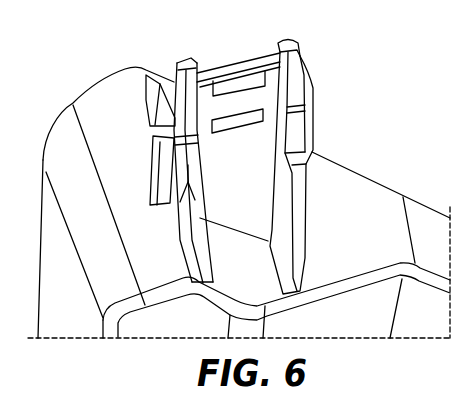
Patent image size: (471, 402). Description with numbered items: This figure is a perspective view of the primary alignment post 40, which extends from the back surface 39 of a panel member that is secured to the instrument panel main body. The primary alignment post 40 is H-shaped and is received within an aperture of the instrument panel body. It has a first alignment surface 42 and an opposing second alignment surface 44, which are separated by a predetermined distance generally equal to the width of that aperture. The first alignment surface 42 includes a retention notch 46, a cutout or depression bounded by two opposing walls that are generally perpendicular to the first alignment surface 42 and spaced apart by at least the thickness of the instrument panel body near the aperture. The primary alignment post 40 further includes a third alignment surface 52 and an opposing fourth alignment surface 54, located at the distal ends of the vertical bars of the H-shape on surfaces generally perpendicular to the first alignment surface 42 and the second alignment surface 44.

The back surface 39 is at (357, 234).
The primary alignment post 40 is at (237, 107).
The first alignment surface 42 is at (148, 168).
The second alignment surface 44 is at (313, 126).
The retention notch 46 is at (168, 127).
The third alignment surface 52 is at (174, 80).
The fourth alignment surface 54 is at (180, 202).